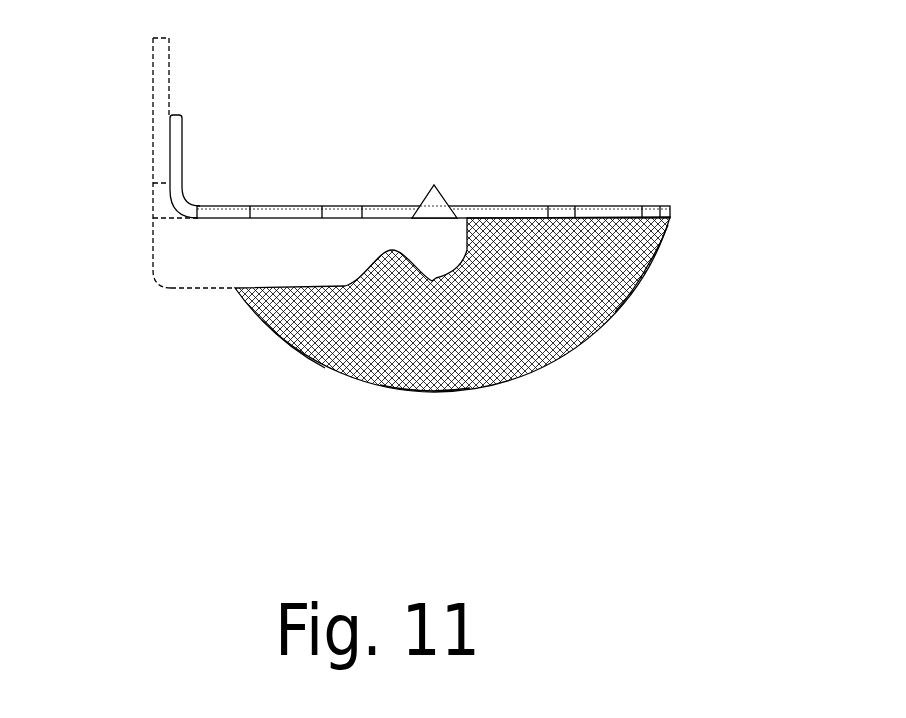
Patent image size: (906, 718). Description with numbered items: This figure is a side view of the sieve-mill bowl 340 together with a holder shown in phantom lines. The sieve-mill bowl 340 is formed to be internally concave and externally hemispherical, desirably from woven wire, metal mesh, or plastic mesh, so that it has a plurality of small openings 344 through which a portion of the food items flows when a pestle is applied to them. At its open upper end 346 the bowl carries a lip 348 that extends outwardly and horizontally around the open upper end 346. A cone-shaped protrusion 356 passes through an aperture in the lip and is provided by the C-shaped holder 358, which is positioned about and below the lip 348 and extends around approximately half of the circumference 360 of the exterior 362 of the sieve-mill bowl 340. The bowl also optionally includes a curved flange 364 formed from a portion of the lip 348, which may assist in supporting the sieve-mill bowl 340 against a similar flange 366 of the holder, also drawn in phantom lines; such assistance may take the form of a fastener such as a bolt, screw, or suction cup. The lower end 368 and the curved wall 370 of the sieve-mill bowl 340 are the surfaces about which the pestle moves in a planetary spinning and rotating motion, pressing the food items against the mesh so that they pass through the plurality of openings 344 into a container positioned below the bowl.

The sieve-mill bowl 340 is at (628, 206).
The plurality of small openings 344 is at (542, 328).
The open upper end 346 is at (533, 206).
The lip 348 is at (303, 205).
The cone-shaped protrusion 356 is at (433, 202).
The C-shaped holder 358 is at (187, 263).
The circumference 360 is at (657, 252).
The exterior 362 is at (633, 293).
The curved flange 364 is at (183, 157).
The flange 366 is at (150, 120).
The lower end 368 is at (423, 393).
The curved wall 370 is at (292, 348).